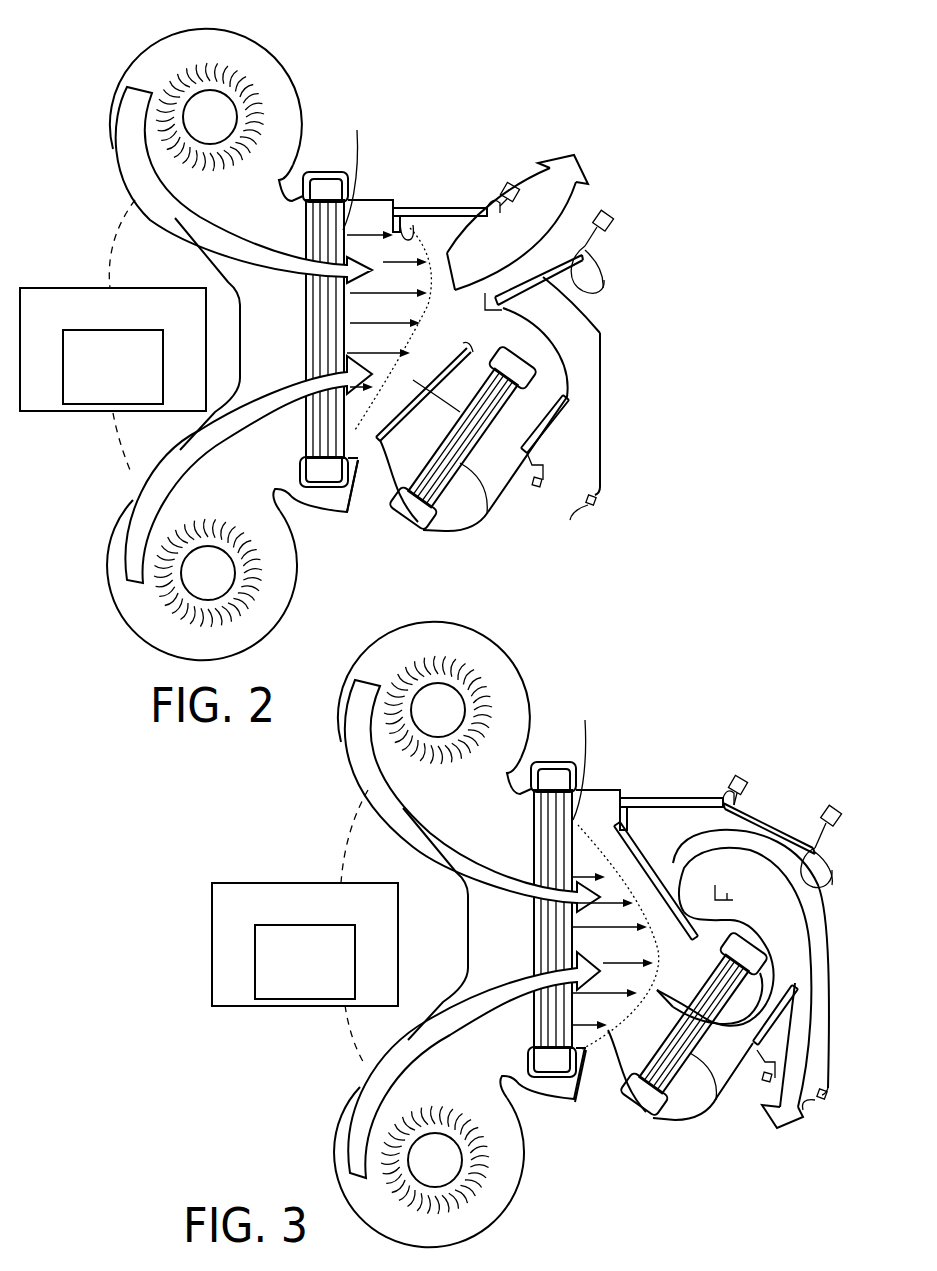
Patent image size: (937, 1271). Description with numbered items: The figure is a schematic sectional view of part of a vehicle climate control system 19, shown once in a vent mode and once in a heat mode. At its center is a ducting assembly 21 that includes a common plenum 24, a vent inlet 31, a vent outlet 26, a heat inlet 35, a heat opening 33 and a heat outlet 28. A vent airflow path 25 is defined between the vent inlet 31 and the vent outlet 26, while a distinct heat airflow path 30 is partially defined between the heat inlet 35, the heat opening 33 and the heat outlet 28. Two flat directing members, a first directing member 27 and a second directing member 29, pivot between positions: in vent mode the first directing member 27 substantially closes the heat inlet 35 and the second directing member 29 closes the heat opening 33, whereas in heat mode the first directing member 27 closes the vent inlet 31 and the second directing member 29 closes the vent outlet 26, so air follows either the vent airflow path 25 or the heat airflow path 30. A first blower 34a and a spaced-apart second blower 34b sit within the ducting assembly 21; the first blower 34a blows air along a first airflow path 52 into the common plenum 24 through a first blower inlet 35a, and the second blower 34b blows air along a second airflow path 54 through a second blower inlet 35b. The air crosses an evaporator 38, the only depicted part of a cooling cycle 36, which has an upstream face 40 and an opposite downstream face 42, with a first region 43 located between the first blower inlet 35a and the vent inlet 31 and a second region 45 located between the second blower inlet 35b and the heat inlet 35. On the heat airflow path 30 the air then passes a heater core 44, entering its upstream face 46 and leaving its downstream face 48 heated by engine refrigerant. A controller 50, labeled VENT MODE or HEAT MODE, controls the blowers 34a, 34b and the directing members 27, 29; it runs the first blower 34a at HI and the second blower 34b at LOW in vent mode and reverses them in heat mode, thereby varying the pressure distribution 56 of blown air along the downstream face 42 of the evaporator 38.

In FIG. 2, the climate control system 19 is at (513, 83).
In FIG. 3, the climate control system 19 is at (733, 693).
In FIG. 2, the ducting assembly 21 is at (446, 240).
In FIG. 3, the ducting assembly 21 is at (643, 848).
In FIG. 2, the common plenum 24 is at (378, 470).
In FIG. 3, the common plenum 24 is at (603, 1045).
In FIG. 2, the vent airflow path 25 is at (543, 187).
In FIG. 3, the vent airflow path 25 is at (737, 790).
In FIG. 2, the vent outlet 26 is at (587, 212).
In FIG. 3, the vent outlet 26 is at (812, 828).
In FIG. 2, the first directing member 27 is at (440, 375).
In FIG. 3, the first directing member 27 is at (652, 873).
In FIG. 2, the heat outlet 28 is at (544, 425).
In FIG. 3, the heat outlet 28 is at (820, 1100).
In FIG. 2, the second directing member 29 is at (592, 318).
In FIG. 3, the second directing member 29 is at (762, 816).
In FIG. 3, the heat airflow path 30 is at (780, 1097).
In FIG. 2, the vent inlet 31 is at (438, 216).
In FIG. 3, the vent inlet 31 is at (577, 855).
In FIG. 2, the heat opening 33 is at (603, 291).
In FIG. 3, the heat opening 33 is at (830, 885).
In FIG. 2, the first blower 34a is at (223, 93).
In FIG. 3, the first blower 34a is at (451, 683).
In FIG. 2, the second blower 34b is at (233, 587).
In FIG. 3, the second blower 34b is at (461, 1177).
In FIG. 2, the first blower inlet 35a is at (278, 183).
In FIG. 3, the first blower inlet 35a is at (360, 803).
In FIG. 2, the second blower inlet 35b is at (272, 491).
In FIG. 3, the second blower inlet 35b is at (365, 1078).
In FIG. 2, the heat inlet 35 is at (400, 432).
In FIG. 3, the heat inlet 35 is at (620, 1023).
In FIG. 2, the cooling cycle 36 is at (324, 194).
In FIG. 3, the cooling cycle 36 is at (552, 785).
In FIG. 2, the evaporator 38 is at (402, 205).
In FIG. 3, the evaporator 38 is at (627, 800).
In FIG. 2, the upstream face 40 is at (326, 329).
In FIG. 3, the upstream face 40 is at (552, 919).
In FIG. 2, the downstream face 42 is at (343, 303).
In FIG. 3, the downstream face 42 is at (577, 942).
In FIG. 2, the first region 43 is at (320, 246).
In FIG. 3, the first region 43 is at (548, 842).
In FIG. 2, the heater core 44 is at (437, 518).
In FIG. 3, the heater core 44 is at (668, 1105).
In FIG. 2, the second region 45 is at (287, 410).
In FIG. 3, the second region 45 is at (515, 1015).
In FIG. 2, the upstream face 46 is at (437, 395).
In FIG. 3, the upstream face 46 is at (660, 1057).
In FIG. 2, the downstream face 48 is at (488, 514).
In FIG. 3, the downstream face 48 is at (714, 1100).
In FIG. 2, the controller 50 is at (70, 288).
In FIG. 3, the controller 50 is at (268, 883).
In FIG. 2, the first airflow path 52 is at (197, 240).
In FIG. 3, the first airflow path 52 is at (447, 830).
In FIG. 2, the second airflow path 54 is at (190, 430).
In FIG. 3, the second airflow path 54 is at (460, 1043).
In FIG. 2, the pressure distribution 56 is at (430, 308).
In FIG. 3, the pressure distribution 56 is at (664, 943).